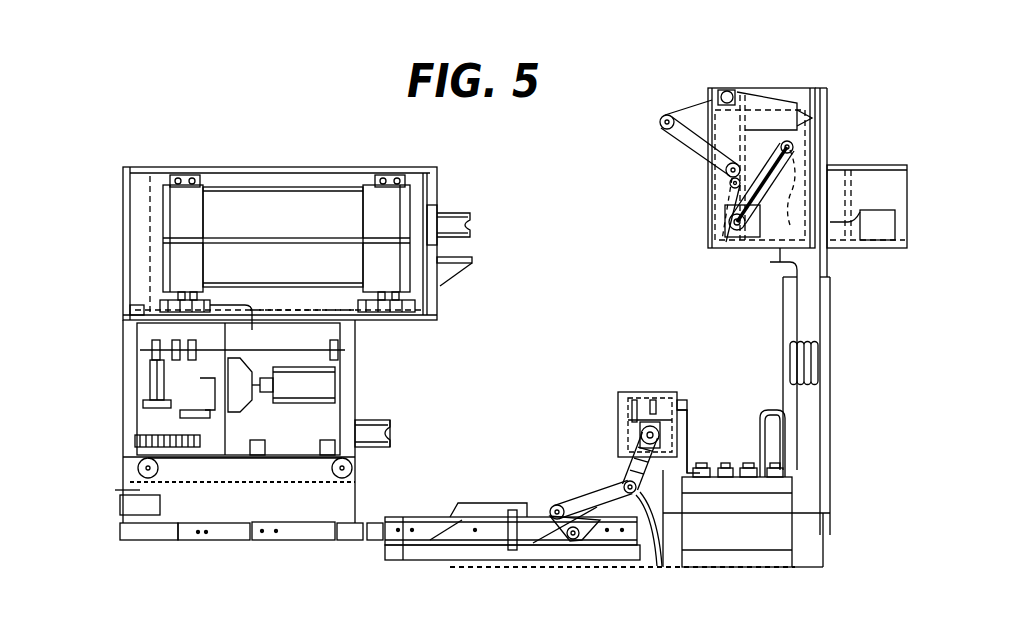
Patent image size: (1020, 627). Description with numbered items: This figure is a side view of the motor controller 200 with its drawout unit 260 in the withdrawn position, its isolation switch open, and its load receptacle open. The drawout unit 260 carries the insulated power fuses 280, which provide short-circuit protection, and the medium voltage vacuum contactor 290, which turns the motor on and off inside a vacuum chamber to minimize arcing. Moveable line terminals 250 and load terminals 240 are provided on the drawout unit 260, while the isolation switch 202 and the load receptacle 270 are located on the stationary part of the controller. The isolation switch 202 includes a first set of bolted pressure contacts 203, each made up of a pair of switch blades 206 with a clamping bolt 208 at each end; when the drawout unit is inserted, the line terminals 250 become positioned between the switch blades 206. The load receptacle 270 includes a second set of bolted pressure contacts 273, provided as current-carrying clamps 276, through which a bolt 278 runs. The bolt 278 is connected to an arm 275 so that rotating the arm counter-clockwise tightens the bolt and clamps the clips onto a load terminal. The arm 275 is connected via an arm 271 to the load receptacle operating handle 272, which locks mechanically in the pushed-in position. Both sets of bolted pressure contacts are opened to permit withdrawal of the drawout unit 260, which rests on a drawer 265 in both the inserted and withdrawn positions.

The motor controller 200 is at (220, 148).
The drawout unit 260 is at (343, 168).
The insulated power fuses 280 is at (291, 224).
The line terminals 250 is at (466, 213).
The medium voltage vacuum contactor 290 is at (116, 385).
The load terminals 240 is at (378, 420).
The drawer 265 is at (190, 500).
The load receptacle operating handle 272 is at (437, 530).
The isolation switch 202 is at (800, 88).
The switch blades 206 is at (720, 163).
The clamping bolt 208 is at (748, 223).
The first set of bolted pressure contacts 203 is at (696, 240).
The load receptacle 270 is at (645, 392).
The current-carrying clamps 276 is at (665, 430).
The bolt 278 is at (660, 437).
The second set of bolted pressure contacts 273 is at (636, 432).
The arm 271 is at (614, 493).
The arm 275 is at (638, 485).